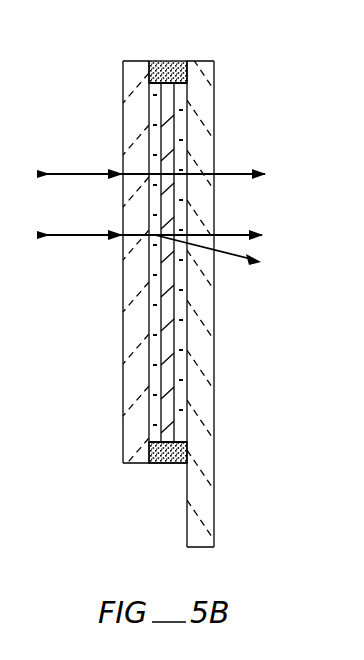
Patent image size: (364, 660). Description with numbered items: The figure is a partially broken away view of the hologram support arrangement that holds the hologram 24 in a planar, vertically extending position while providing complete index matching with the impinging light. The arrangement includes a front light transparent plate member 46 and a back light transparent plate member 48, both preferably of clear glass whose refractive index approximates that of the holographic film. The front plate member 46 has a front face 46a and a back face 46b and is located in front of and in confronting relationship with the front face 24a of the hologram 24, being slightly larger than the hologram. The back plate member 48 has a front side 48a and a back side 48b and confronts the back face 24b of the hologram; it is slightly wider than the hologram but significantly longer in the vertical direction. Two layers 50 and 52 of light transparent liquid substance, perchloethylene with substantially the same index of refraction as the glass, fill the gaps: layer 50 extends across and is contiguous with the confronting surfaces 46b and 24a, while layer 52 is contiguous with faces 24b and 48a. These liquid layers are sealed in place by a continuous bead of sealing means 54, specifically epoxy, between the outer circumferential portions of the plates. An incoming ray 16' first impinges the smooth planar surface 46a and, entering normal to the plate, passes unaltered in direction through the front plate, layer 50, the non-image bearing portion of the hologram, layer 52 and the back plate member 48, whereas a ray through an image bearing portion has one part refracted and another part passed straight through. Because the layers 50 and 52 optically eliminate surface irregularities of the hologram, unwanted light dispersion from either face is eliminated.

The incoming ray of beam 16' is at (151, 150).
The hologram 24 is at (166, 336).
The front face of hologram 24a is at (174, 370).
The back face of hologram 24b is at (187, 405).
The front light transparent plate member 46 is at (135, 318).
The front face of front plate member 46a is at (123, 363).
The back face of front plate member 46b is at (150, 407).
The back light transparent plate member 48 is at (197, 482).
The front side of back plate member 48a is at (186, 503).
The back side of back plate member 48b is at (214, 521).
The layer of light transparent liquid substance 50 is at (150, 110).
The layer of light transparent liquid substance 52 is at (187, 98).
The sealing means 54 is at (170, 61).